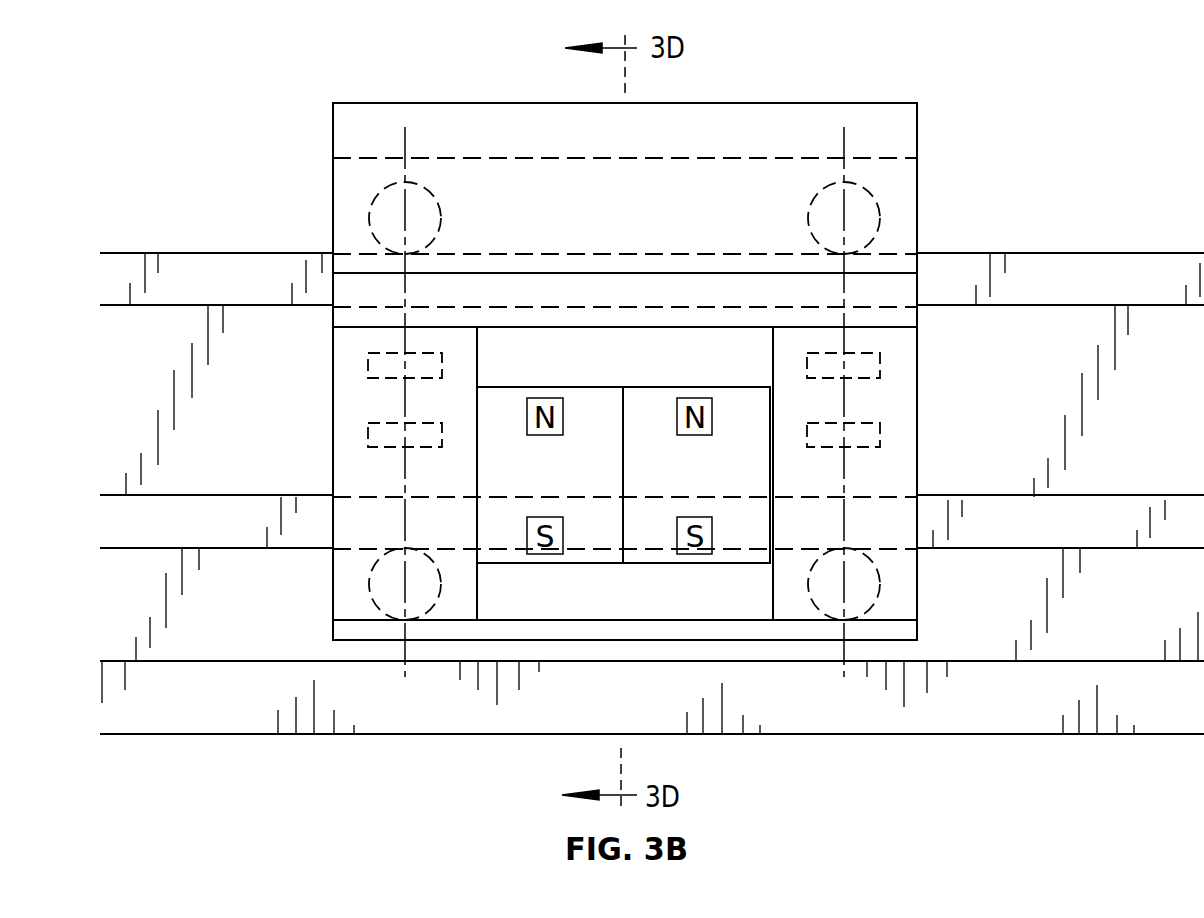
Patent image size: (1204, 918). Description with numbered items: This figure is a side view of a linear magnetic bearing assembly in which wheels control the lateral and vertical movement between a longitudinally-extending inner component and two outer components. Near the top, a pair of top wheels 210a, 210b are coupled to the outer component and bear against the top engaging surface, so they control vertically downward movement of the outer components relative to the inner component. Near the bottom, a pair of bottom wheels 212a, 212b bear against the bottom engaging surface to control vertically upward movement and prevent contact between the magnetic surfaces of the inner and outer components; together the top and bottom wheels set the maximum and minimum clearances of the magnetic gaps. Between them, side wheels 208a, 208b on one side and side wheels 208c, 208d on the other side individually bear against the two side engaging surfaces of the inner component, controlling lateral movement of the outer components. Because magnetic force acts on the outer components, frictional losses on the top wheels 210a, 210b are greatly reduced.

The top wheel 210a is at (880, 210).
The top wheel 210b is at (372, 210).
The bottom wheel 212a is at (880, 581).
The bottom wheel 212b is at (371, 577).
The side wheel 208a is at (880, 363).
The side wheel 208b is at (880, 431).
The side wheel 208c is at (368, 358).
The side wheel 208d is at (368, 428).